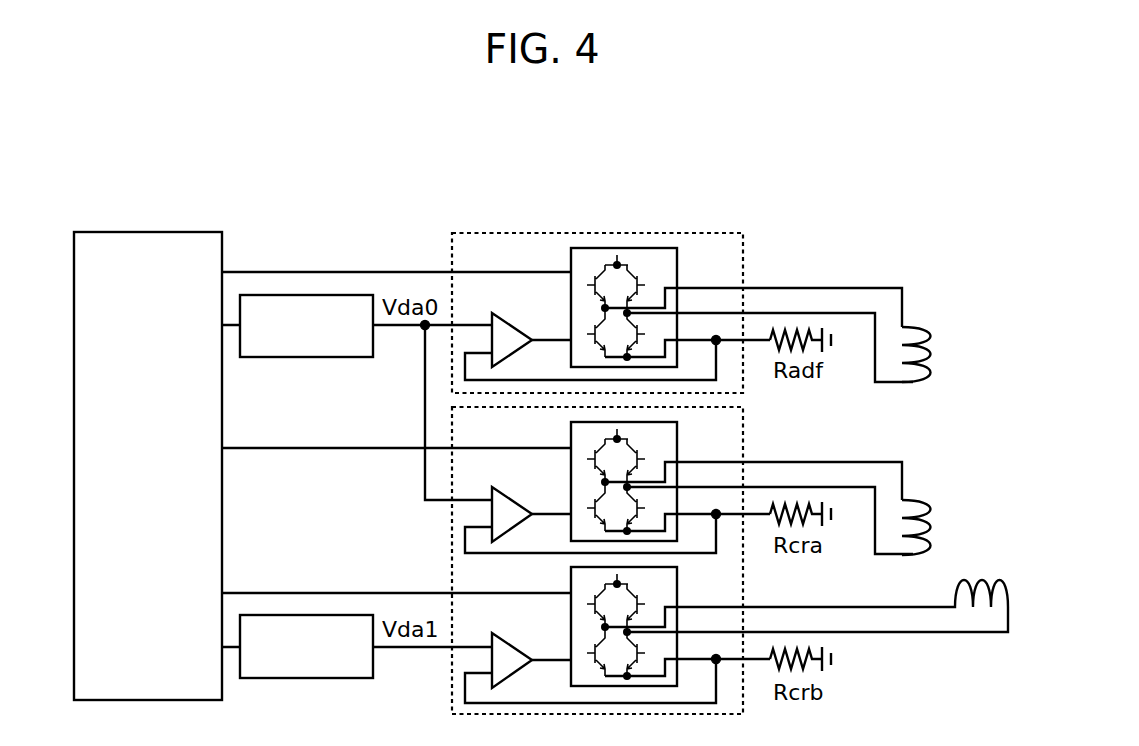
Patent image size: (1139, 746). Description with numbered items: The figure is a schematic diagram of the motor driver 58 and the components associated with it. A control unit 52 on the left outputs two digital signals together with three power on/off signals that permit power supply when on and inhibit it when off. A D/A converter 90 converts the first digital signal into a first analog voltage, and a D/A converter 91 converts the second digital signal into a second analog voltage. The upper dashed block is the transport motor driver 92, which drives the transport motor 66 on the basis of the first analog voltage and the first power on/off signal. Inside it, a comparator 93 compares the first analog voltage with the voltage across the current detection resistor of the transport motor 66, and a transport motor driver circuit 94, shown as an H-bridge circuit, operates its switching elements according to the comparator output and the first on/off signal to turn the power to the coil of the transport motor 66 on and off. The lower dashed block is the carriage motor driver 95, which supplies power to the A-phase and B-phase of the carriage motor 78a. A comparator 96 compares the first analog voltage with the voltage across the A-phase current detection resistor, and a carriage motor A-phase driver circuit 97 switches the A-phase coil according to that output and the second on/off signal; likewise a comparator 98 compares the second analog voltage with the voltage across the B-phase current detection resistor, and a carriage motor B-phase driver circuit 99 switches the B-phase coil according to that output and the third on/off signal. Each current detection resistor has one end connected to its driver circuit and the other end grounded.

The control unit 52 is at (157, 232).
The motor driver 58 is at (685, 220).
The transport motor 66 is at (930, 322).
The carriage motor 78a is at (947, 548).
The D/A converter 90 is at (302, 357).
The D/A converter 91 is at (302, 678).
The transport motor driver 92 is at (743, 247).
The comparator 93 is at (512, 313).
The transport motor driver circuit 94 is at (677, 268).
The carriage motor driver 95 is at (743, 420).
The comparator 96 is at (512, 487).
The carriage motor A-phase driver circuit 97 is at (677, 441).
The comparator 98 is at (512, 633).
The carriage motor B-phase driver circuit 99 is at (677, 586).